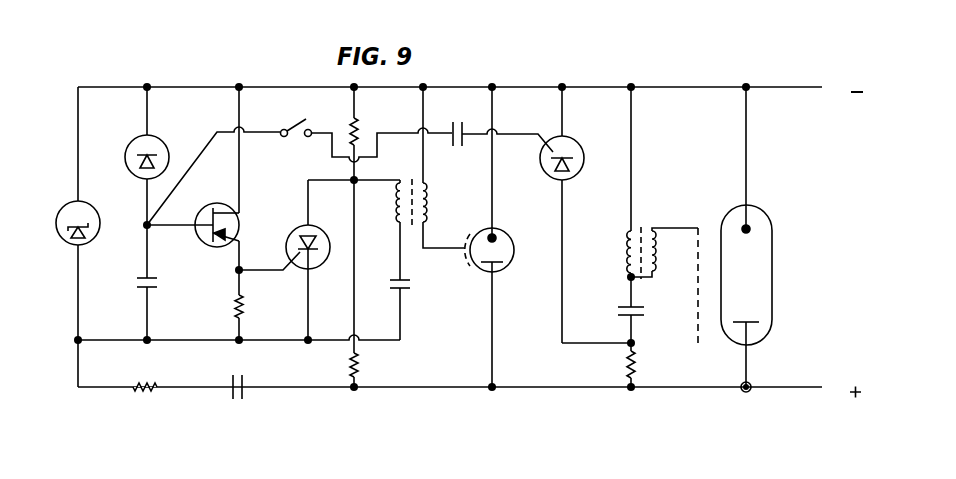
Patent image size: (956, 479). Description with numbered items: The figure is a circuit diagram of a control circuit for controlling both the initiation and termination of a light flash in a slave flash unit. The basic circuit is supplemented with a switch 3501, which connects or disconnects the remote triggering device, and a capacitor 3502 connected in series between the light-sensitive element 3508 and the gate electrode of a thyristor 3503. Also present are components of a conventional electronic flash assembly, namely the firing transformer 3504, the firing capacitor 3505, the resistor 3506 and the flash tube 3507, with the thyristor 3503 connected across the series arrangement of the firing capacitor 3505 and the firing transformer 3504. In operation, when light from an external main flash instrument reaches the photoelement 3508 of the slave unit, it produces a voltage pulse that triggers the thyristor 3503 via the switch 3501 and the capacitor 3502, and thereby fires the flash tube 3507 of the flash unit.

The switch 3501 is at (297, 117).
The capacitor 3502 is at (459, 123).
The thyristor 3503 is at (578, 215).
The firing transformer 3504 is at (634, 253).
The firing capacitor 3505 is at (658, 311).
The resistor 3506 is at (659, 367).
The flash tube 3507 is at (774, 296).
The light-sensitive element 3508 is at (193, 127).